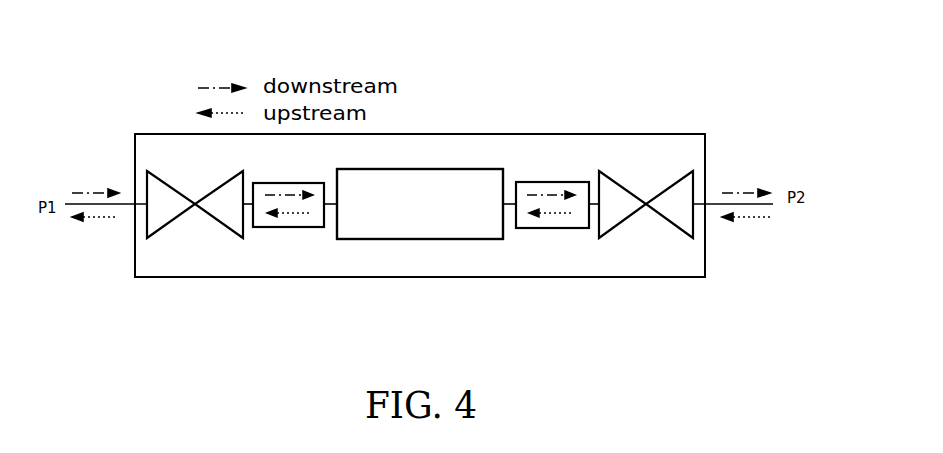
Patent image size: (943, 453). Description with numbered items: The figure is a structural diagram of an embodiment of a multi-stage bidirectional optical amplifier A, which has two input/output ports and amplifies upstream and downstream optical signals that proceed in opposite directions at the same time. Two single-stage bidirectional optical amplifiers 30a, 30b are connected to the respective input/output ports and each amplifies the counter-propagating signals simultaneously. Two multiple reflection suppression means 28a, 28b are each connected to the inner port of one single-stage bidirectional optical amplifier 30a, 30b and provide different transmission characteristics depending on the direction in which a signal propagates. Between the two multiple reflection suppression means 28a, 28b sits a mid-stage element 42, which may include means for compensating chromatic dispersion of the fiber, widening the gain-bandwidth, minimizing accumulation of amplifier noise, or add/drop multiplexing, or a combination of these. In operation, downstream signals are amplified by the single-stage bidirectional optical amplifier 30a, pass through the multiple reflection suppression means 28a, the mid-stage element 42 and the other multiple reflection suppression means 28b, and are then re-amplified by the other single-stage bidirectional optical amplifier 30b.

The multi-stage bidirectional optical amplifier A is at (591, 132).
The single-stage bidirectional optical amplifier 30a is at (163, 227).
The multiple reflection suppression means 28a is at (293, 227).
The mid-stage element 42 is at (418, 239).
The multiple reflection suppression means 28b is at (553, 228).
The single-stage bidirectional optical amplifier 30b is at (623, 222).